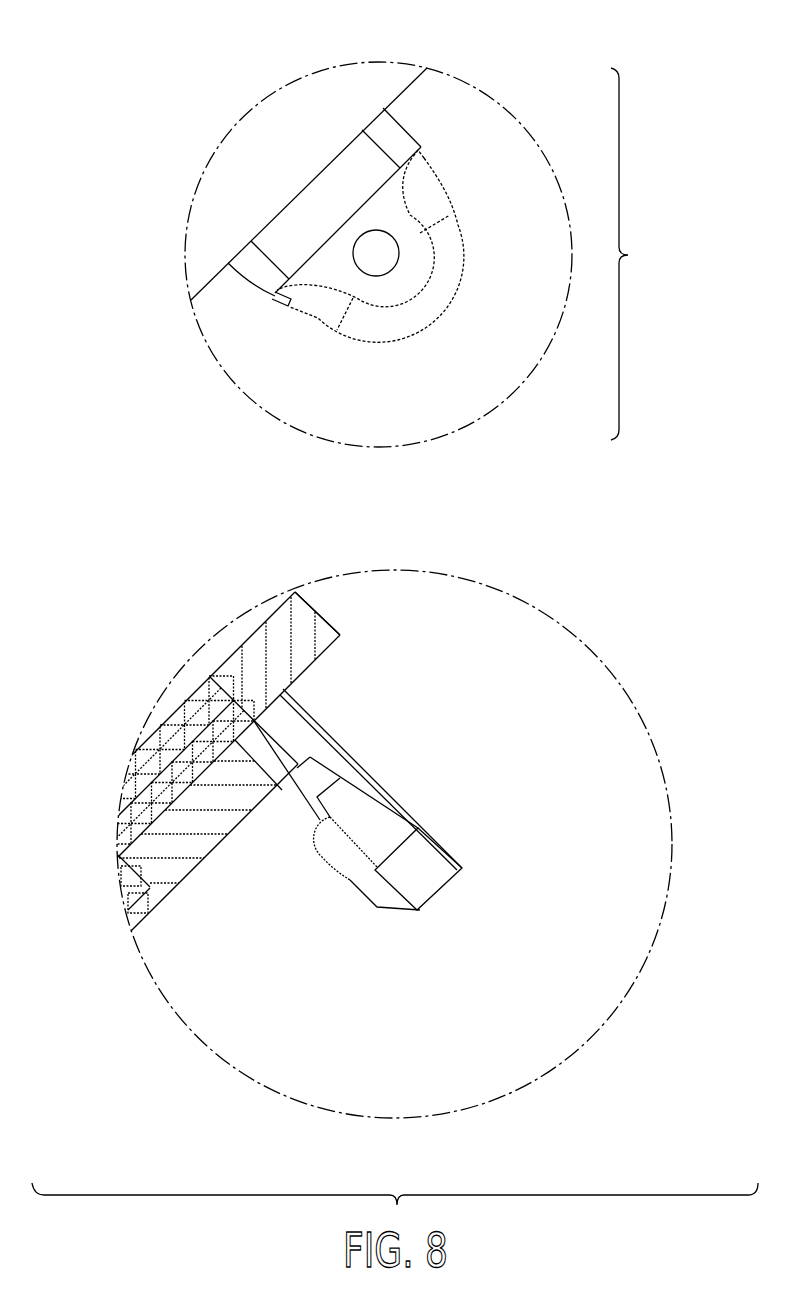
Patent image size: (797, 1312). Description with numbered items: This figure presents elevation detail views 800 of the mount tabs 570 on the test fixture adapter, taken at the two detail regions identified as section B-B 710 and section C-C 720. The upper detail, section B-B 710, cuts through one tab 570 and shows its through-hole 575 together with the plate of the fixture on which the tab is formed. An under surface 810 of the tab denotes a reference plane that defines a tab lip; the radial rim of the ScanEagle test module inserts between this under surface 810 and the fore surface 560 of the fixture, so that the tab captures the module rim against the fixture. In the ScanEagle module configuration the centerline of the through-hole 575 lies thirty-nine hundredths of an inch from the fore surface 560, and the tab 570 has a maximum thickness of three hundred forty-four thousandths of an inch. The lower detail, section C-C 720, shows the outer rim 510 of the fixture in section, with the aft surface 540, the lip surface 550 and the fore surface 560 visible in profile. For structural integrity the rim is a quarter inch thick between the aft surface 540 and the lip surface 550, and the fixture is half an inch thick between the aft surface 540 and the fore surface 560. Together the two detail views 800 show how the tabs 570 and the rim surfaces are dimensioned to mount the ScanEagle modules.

The elevation detail views 800 is at (212, 86).
The section B-B 710 is at (371, 64).
The tab 570 is at (641, 254).
The fore surface 560 is at (201, 294).
The under surface 810 is at (320, 239).
The through-hole 575 is at (375, 278).
The outer rim 510 is at (333, 608).
The aft surface 540 is at (238, 645).
The lip surface 550 is at (332, 668).
The section C-C 720 is at (120, 794).